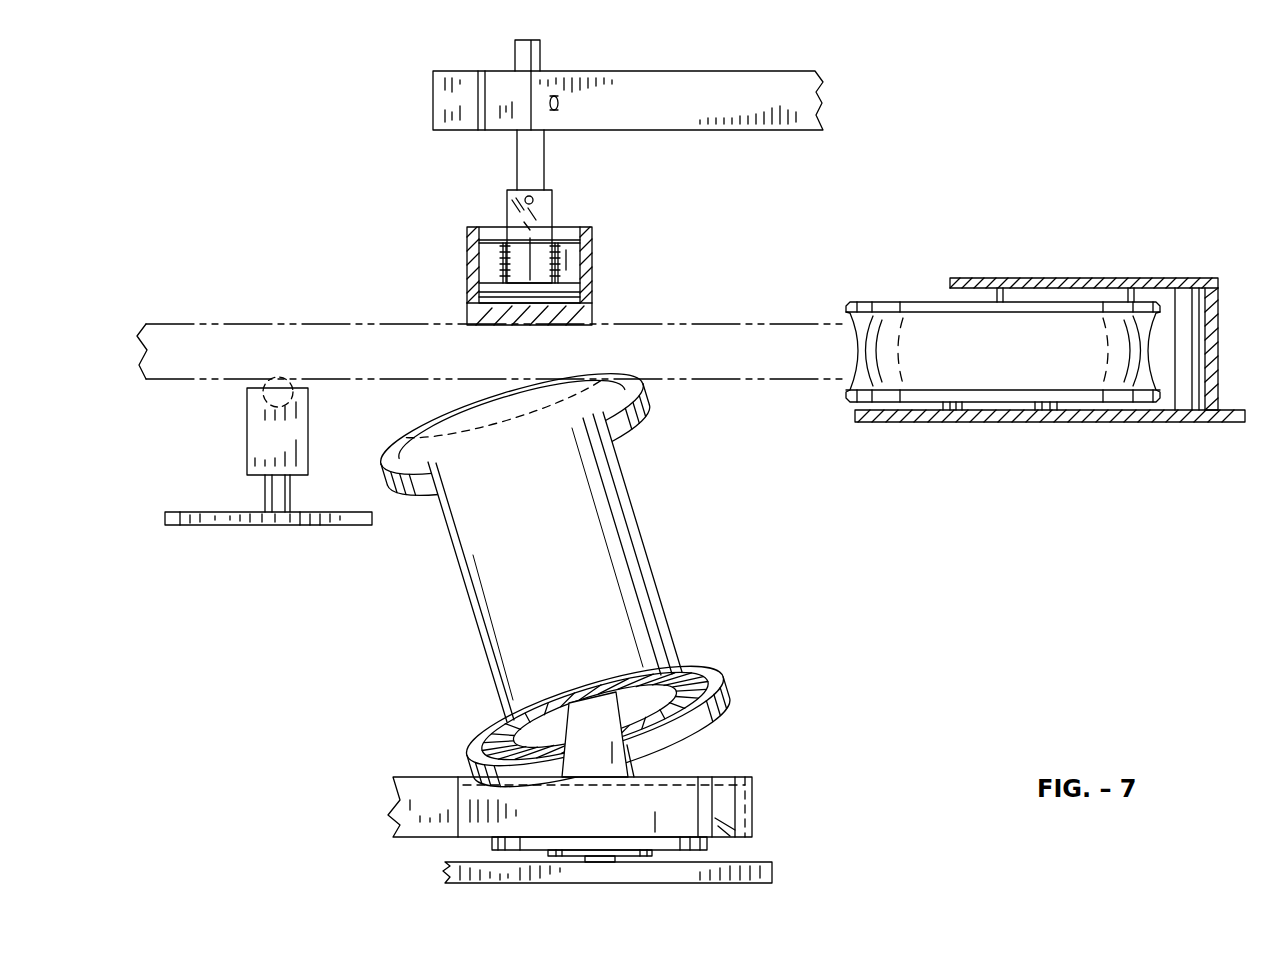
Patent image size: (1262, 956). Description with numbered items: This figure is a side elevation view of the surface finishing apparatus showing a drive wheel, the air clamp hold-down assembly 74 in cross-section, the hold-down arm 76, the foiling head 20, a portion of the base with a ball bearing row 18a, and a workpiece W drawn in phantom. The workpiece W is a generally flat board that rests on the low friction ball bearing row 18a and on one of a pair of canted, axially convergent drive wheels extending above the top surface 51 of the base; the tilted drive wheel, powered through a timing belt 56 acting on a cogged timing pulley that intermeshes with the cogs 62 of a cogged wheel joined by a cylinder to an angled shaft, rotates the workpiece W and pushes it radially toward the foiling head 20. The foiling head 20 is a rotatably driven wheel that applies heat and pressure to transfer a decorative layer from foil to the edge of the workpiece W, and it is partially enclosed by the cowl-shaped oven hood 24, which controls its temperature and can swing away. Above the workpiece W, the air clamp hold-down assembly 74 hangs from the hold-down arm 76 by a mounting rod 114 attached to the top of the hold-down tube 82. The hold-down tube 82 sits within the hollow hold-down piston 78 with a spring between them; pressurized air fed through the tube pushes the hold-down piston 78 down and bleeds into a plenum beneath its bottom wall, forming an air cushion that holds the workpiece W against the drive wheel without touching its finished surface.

The hold-down arm 76 is at (793, 78).
The mounting rod 114 is at (540, 56).
The hold-down tube 82 is at (553, 210).
The hold-down piston 78 is at (597, 285).
The air clamp hold-down assembly 74 is at (632, 220).
The workpiece W is at (674, 350).
The foiling head 20 is at (866, 303).
The oven hood 24 is at (1185, 280).
The ball bearing row 18a is at (260, 397).
The top surface 51 is at (215, 522).
The cogs 62 is at (720, 712).
The timing belt 56 is at (428, 790).